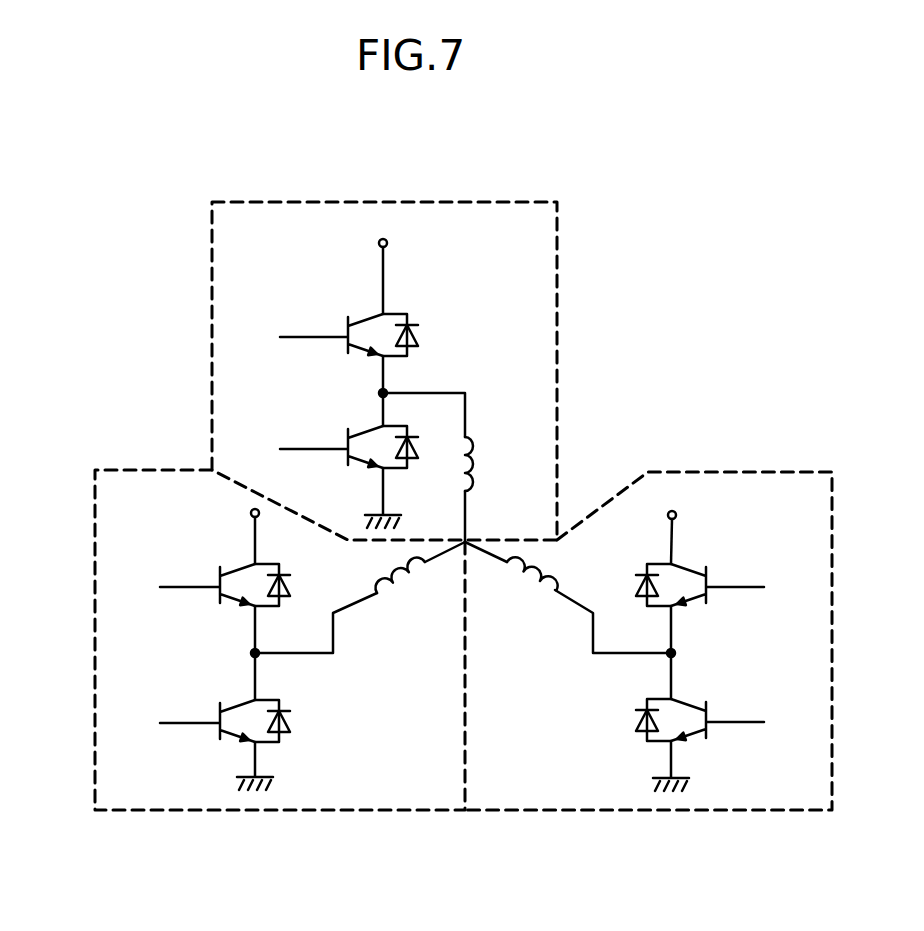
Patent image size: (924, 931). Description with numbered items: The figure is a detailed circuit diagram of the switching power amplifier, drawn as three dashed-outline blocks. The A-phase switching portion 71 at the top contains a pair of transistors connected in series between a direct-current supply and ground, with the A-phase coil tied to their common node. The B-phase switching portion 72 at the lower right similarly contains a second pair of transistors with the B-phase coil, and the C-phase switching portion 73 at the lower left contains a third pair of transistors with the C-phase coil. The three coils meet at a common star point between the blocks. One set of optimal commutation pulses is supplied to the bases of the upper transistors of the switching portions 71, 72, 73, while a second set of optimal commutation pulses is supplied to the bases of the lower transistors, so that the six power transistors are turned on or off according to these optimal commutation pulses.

The A-phase switching portion 71 is at (557, 340).
The B-phase switching portion 72 is at (832, 648).
The C-phase switching portion 73 is at (95, 648).